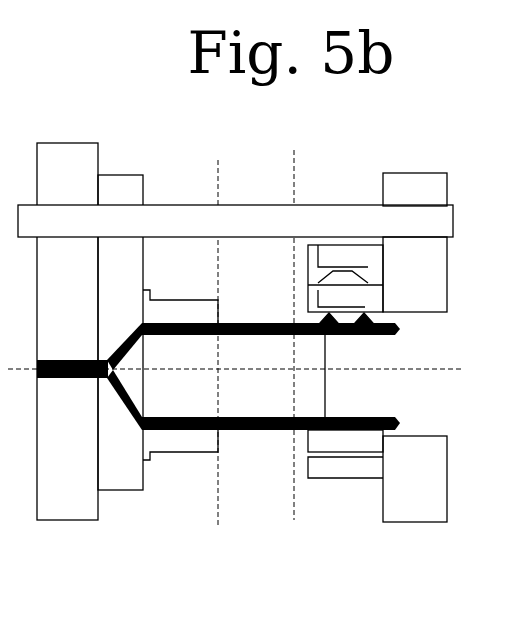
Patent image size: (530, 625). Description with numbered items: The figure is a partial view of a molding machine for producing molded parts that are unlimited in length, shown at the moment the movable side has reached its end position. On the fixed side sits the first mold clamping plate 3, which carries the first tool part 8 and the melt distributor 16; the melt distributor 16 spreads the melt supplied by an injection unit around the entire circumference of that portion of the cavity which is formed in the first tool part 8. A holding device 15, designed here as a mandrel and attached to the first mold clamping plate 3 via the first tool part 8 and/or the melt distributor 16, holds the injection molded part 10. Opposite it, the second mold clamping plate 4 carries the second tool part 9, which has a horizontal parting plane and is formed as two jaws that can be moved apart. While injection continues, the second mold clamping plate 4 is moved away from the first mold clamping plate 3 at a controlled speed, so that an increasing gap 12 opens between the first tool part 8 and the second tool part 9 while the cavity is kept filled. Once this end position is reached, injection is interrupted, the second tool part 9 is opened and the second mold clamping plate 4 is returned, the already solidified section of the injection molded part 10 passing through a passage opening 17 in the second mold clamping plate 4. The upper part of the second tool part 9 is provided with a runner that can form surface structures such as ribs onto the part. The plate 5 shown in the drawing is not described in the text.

The first mold clamping plate 3 is at (62, 163).
The melt distributor 16 is at (110, 190).
The first tool part 8 is at (181, 443).
The holding device 15 is at (244, 397).
The plate 5 is at (435, 222).
The second mold clamping plate 4 is at (428, 188).
The second tool part 9 is at (350, 258).
The injection molded part 10 is at (398, 423).
The gap 12 is at (259, 303).
The passage opening 17 is at (445, 336).